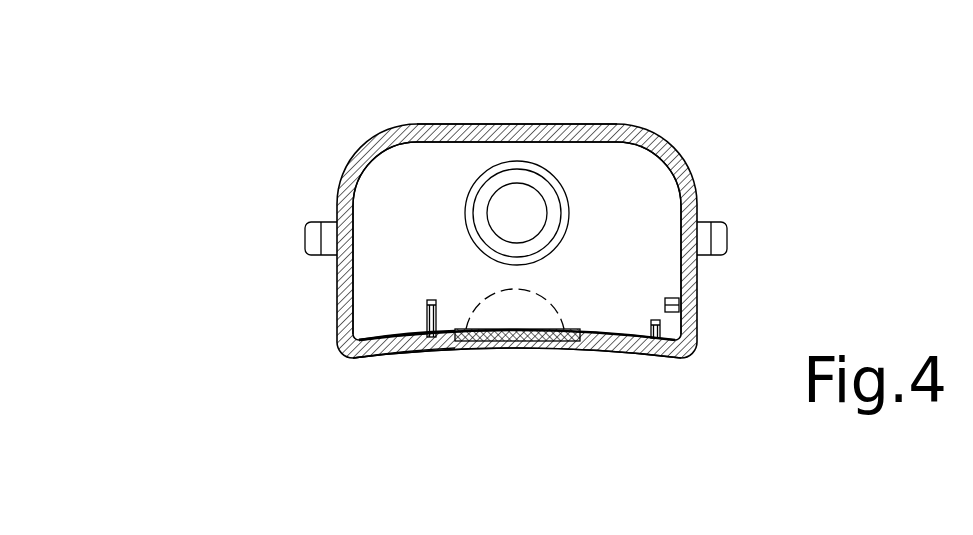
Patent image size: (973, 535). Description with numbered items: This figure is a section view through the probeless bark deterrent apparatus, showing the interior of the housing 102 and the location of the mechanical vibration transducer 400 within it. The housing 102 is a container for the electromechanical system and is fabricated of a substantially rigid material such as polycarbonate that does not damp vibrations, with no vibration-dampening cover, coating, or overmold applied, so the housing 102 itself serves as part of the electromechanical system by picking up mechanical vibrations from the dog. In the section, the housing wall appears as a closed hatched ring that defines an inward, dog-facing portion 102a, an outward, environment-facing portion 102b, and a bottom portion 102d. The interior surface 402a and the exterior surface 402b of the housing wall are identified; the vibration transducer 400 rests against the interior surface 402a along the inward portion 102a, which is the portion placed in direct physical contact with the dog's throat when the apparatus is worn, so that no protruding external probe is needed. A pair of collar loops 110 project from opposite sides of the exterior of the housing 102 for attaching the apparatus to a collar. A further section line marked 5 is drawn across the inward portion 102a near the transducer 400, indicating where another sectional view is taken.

The housing 102 is at (337, 297).
The inward portion 102a is at (637, 360).
The outward portion 102b is at (588, 123).
The bottom portion 102d is at (645, 186).
The collar loops 110 is at (306, 233).
The vibration transducer 400 is at (503, 352).
The interior surface 402a is at (393, 333).
The exterior surface 402b is at (411, 360).
The section line 5-5 / positioning pin 5 is at (436, 352).